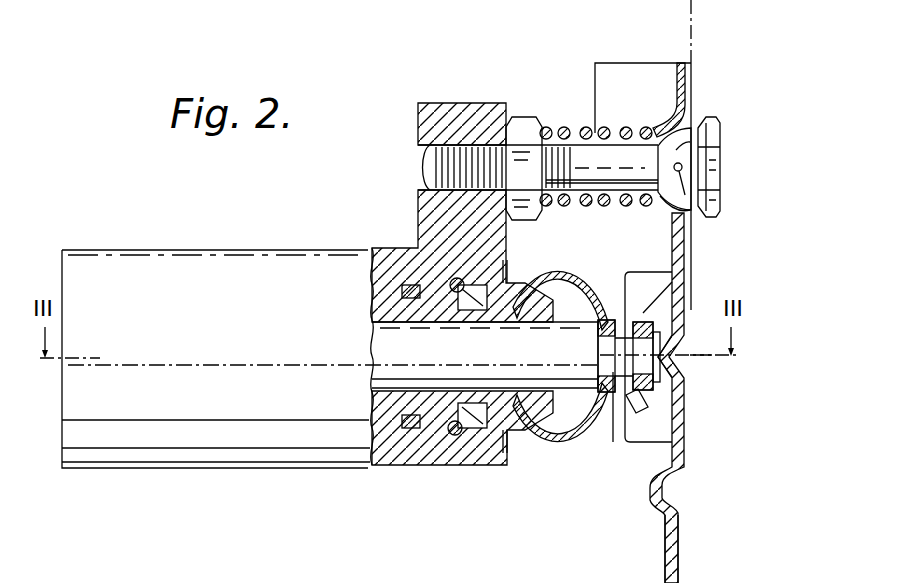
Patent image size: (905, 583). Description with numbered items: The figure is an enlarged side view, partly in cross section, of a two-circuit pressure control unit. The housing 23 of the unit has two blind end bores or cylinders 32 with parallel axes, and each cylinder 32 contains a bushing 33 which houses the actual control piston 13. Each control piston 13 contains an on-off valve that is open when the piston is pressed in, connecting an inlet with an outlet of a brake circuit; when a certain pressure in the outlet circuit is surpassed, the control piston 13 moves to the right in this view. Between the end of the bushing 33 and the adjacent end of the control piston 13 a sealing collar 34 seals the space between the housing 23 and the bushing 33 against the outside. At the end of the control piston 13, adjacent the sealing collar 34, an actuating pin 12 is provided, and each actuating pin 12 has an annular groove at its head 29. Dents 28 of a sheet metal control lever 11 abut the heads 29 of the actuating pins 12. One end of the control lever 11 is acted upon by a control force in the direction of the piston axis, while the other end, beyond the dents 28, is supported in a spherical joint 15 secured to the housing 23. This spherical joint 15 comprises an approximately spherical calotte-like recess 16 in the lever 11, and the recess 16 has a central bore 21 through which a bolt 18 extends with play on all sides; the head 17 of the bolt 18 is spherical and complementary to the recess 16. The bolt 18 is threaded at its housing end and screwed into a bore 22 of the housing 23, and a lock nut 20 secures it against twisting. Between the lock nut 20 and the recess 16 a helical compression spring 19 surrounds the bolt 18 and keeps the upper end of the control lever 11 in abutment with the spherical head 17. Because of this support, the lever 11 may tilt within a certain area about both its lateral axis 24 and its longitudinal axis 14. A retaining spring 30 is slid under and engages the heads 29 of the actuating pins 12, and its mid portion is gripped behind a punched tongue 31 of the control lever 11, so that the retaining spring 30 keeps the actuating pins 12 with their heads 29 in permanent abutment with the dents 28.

The control lever 11 is at (693, 582).
The actuating pin 12 is at (610, 345).
The control piston 13 is at (408, 388).
The longitudinal axis 14 is at (690, 22).
The spherical joint 15 is at (696, 104).
The calotte-like recess 16 is at (685, 261).
The head of bolt 17 is at (678, 155).
The bolt 18 is at (588, 156).
The helical compression spring 19 is at (602, 128).
The lock nut 20 is at (520, 118).
The central bore 21 is at (657, 133).
The bore 22 is at (418, 137).
The housing 23 is at (272, 268).
The lateral axis 24 is at (688, 207).
The dent 28 is at (678, 338).
The head of actuating pin 29 is at (645, 318).
The retaining spring 30 is at (620, 400).
The punched tongue 31 is at (646, 407).
The cylinder 32 is at (470, 297).
The bushing 33 is at (440, 415).
The sealing collar 34 is at (557, 582).